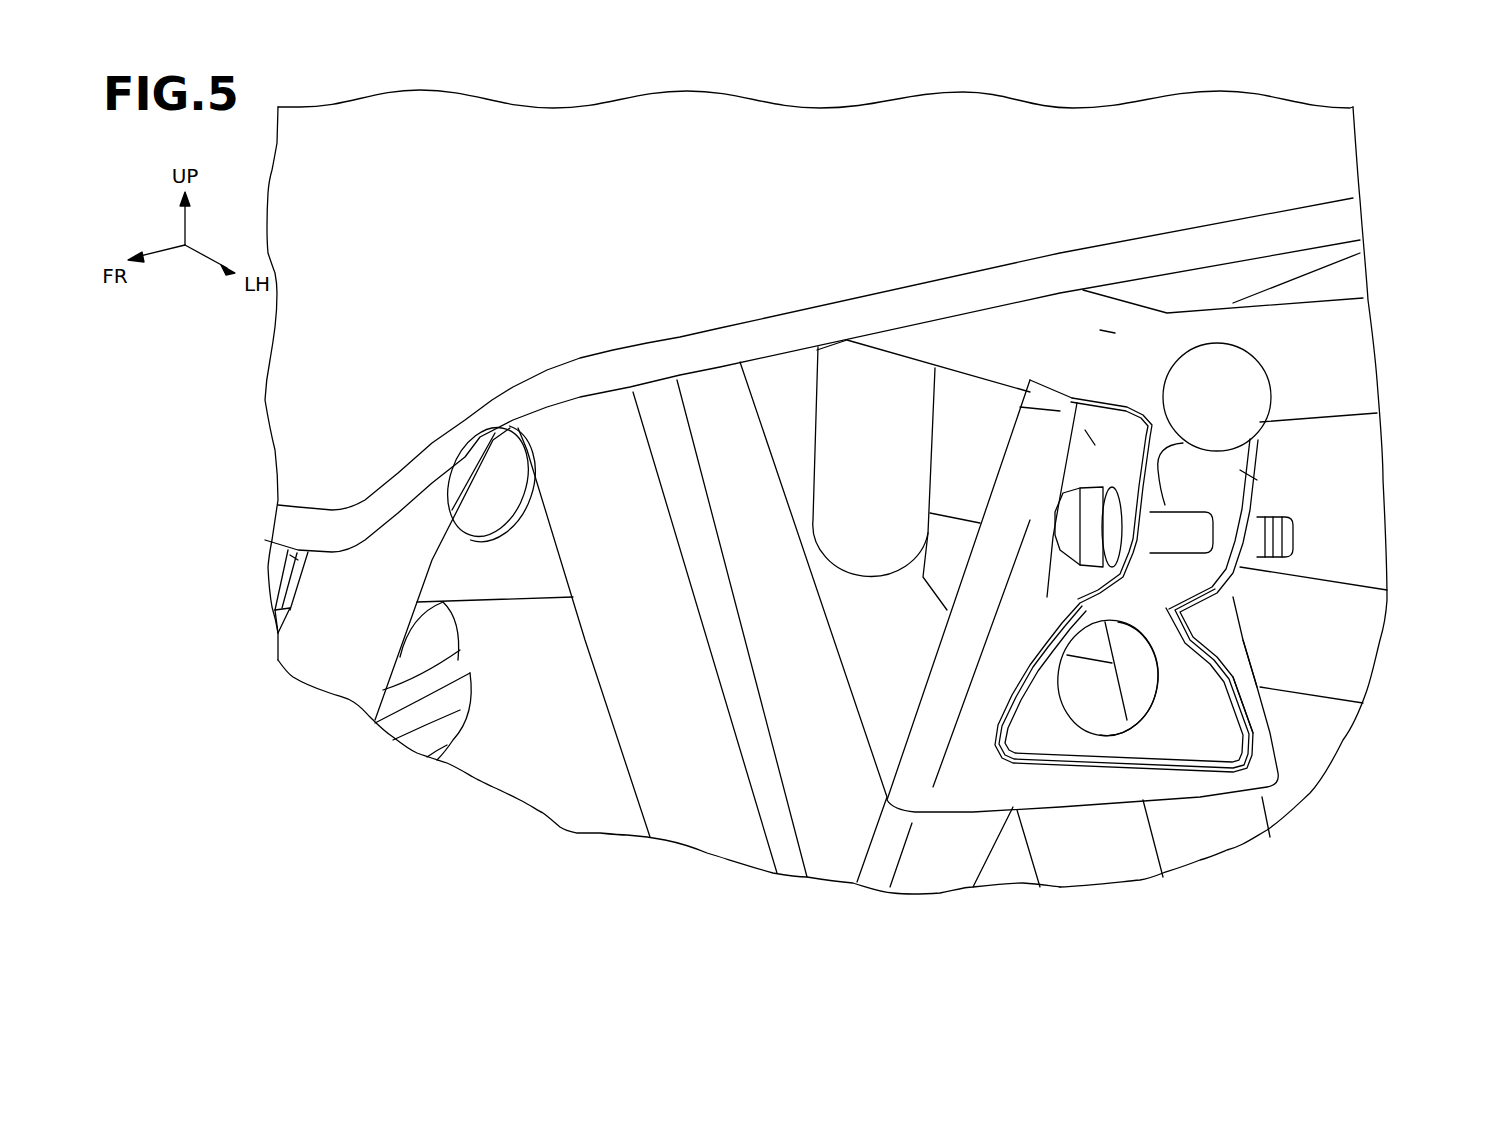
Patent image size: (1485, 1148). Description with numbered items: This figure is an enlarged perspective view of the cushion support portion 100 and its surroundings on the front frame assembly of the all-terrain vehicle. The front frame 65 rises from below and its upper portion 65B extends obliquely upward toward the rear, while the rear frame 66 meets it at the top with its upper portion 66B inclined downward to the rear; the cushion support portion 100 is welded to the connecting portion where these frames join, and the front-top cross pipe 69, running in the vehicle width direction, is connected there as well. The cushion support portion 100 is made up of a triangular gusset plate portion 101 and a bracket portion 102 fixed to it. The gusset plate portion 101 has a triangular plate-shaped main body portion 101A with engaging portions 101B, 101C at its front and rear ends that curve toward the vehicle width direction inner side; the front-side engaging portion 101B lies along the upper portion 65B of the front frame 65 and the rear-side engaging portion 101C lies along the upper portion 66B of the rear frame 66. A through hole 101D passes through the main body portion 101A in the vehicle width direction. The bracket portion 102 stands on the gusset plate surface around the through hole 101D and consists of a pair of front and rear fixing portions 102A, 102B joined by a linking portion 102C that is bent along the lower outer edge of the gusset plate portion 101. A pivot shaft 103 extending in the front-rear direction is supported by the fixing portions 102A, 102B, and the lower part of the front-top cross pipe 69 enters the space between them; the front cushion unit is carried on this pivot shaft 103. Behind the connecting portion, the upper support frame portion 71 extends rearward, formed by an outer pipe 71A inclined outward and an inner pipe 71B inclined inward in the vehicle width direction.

The front frame 65 is at (883, 867).
The upper portion of the front frame 65B is at (325, 627).
The rear frame 66 is at (1243, 823).
The upper portion of the rear frame 66B is at (1243, 807).
The front-top cross pipe 69 is at (1097, 333).
The upper support frame portion 71 is at (1303, 243).
The outer pipe 71A is at (1360, 387).
The inner pipe 71B is at (1357, 267).
The cushion support portion 100 is at (507, 612).
The gusset plate portion 101 is at (1163, 787).
The main body portion 101A is at (1097, 783).
The front-side engaging portion 101B is at (292, 560).
The rear-side engaging portion 101C is at (1247, 633).
The through hole 101D is at (512, 510).
The bracket portion 102 is at (1203, 609).
The front fixing portion 102A is at (1090, 437).
The rear fixing portion 102B is at (1243, 480).
The linking portion 102C is at (1243, 723).
The pivot shaft 103 is at (1043, 523).